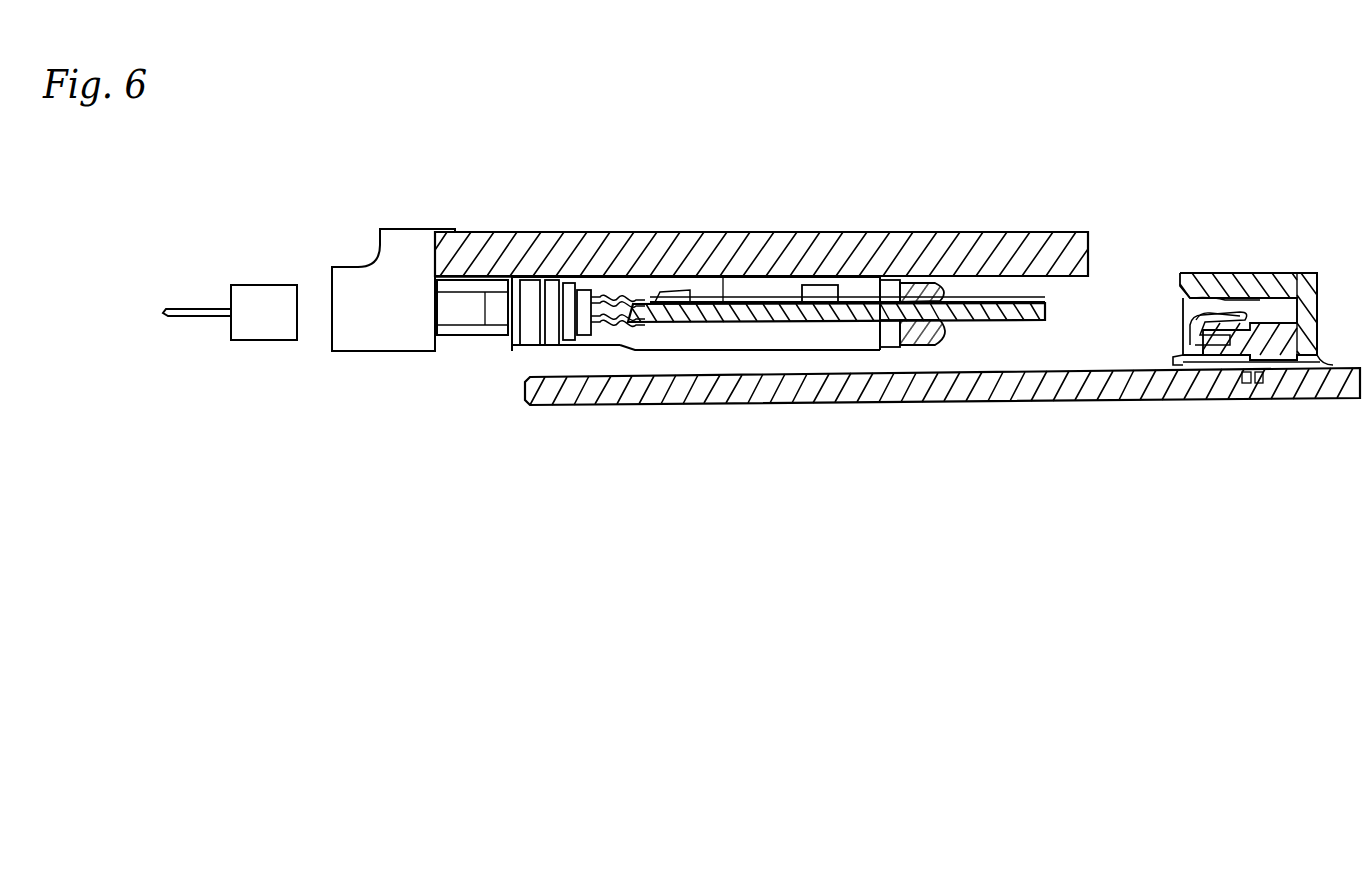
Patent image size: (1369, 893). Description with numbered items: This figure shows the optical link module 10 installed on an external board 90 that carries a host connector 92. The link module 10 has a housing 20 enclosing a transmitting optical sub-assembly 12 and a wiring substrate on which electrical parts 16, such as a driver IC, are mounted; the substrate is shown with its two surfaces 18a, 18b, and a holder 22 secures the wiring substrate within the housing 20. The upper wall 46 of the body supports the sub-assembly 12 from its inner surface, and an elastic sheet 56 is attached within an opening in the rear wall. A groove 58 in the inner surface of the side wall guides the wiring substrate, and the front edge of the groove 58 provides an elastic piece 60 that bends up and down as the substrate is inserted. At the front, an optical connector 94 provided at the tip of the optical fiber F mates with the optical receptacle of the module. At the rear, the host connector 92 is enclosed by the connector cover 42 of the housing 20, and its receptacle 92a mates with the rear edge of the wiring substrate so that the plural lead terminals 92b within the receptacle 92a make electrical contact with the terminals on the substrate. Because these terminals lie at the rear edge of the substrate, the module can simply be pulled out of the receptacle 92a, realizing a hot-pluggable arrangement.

The optical link module 10 is at (762, 218).
The transmitting optical sub-assembly 12 is at (462, 345).
The electrical parts 16 is at (822, 290).
The upper guide rail 18a is at (1028, 300).
The lower guide rail / slider 18b is at (1018, 322).
The housing 20 is at (410, 212).
The holder 22 is at (933, 343).
The connector cover 42 is at (995, 270).
The upper wall 46 is at (557, 268).
The elastic sheet 56 is at (930, 290).
The groove 58 is at (723, 300).
The elastic piece 60 is at (678, 300).
The external board 90 is at (860, 410).
The host connector 92 is at (1278, 275).
The receptacle 92a is at (1176, 282).
The lead terminals 92b is at (1209, 360).
The optical connector 94 is at (263, 342).
The optical fiber F is at (188, 318).